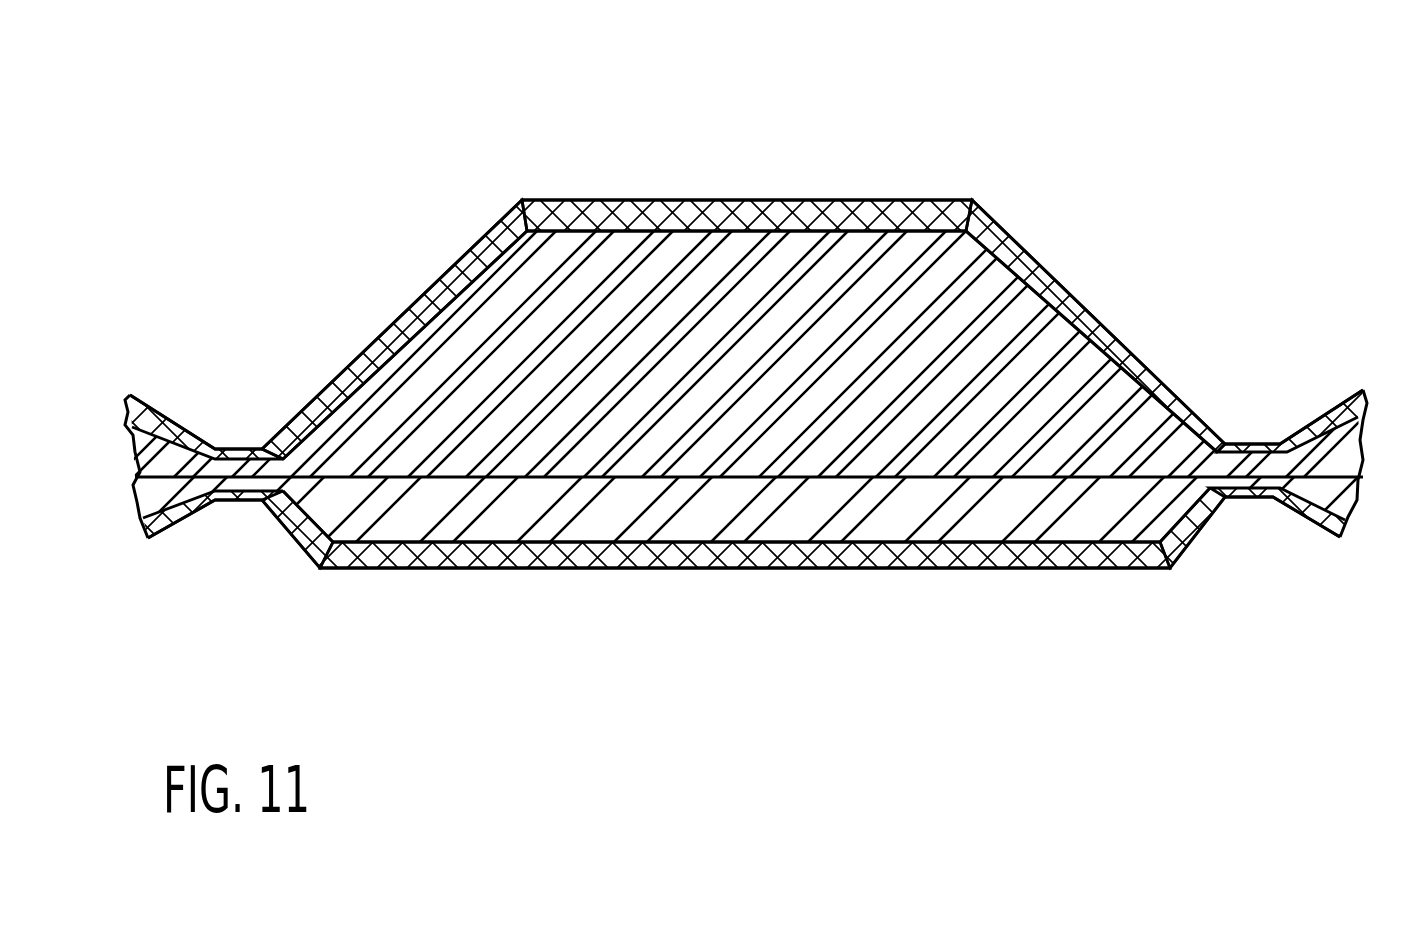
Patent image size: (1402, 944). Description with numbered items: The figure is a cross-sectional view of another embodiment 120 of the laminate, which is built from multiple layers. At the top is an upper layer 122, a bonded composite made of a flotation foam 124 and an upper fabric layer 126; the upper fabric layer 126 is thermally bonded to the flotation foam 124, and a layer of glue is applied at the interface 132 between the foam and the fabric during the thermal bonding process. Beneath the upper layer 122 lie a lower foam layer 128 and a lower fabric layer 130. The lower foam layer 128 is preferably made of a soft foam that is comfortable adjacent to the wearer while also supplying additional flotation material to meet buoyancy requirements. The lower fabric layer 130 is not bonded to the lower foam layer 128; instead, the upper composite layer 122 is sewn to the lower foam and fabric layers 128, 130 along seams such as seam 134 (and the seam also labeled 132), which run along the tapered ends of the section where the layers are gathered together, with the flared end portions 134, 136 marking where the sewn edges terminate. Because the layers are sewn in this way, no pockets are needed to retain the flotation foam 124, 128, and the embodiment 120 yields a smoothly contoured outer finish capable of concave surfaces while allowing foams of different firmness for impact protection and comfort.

The laminate embodiment 120 is at (593, 135).
The upper layer 122 is at (823, 262).
The flotation foam 124 is at (452, 317).
The upper fabric layer 126 is at (903, 207).
The lower foam layer 128 is at (923, 508).
The lower fabric layer 130 is at (740, 565).
The interface 132 is at (1003, 240).
The seam 134 is at (243, 457).
The second neck portion 136 is at (1257, 442).